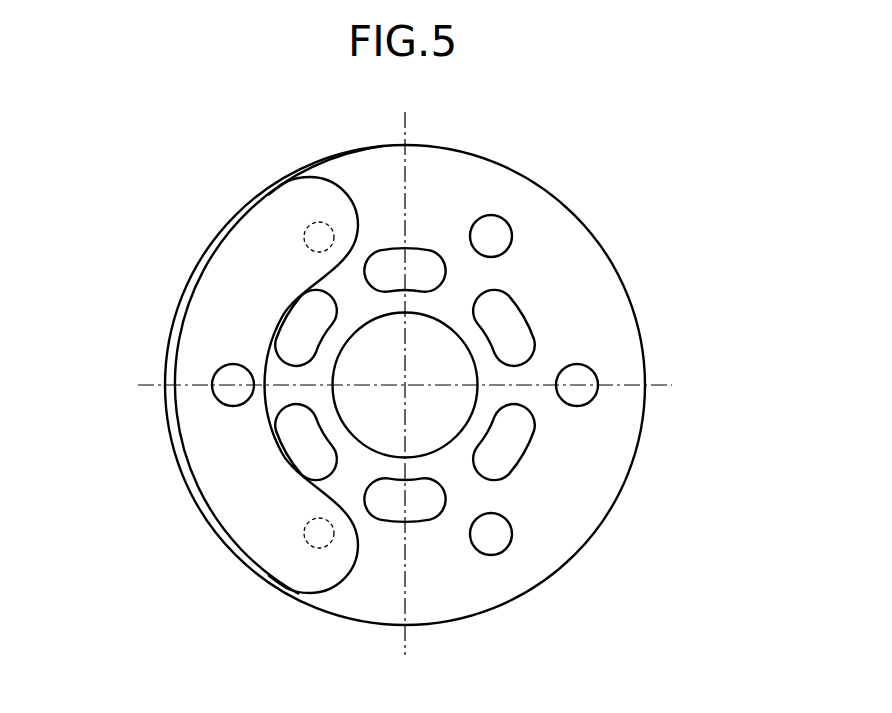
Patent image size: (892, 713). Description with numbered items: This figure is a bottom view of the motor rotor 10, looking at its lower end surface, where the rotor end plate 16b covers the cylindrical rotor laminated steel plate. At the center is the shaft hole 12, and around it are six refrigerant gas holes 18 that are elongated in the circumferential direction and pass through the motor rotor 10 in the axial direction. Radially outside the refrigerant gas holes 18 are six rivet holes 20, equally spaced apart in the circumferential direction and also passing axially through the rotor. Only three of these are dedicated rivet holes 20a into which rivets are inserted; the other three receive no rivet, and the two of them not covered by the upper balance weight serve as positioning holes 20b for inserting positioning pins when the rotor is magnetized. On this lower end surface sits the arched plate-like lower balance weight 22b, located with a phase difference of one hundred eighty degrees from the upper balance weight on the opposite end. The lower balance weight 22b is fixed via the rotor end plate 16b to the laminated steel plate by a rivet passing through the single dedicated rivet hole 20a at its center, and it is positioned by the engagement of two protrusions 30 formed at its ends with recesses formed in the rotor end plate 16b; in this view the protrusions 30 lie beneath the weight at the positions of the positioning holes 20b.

The motor rotor 10 is at (655, 210).
The shaft hole 12 is at (391, 364).
The rotor end plate 16b is at (450, 177).
The refrigerant gas hole 18 is at (385, 263).
The rivet hole 20 is at (582, 393).
The dedicated rivet hole 20a is at (490, 237).
The positioning hole 20b is at (254, 386).
The lower balance weight 22b is at (212, 298).
The protrusion 30 is at (318, 237).